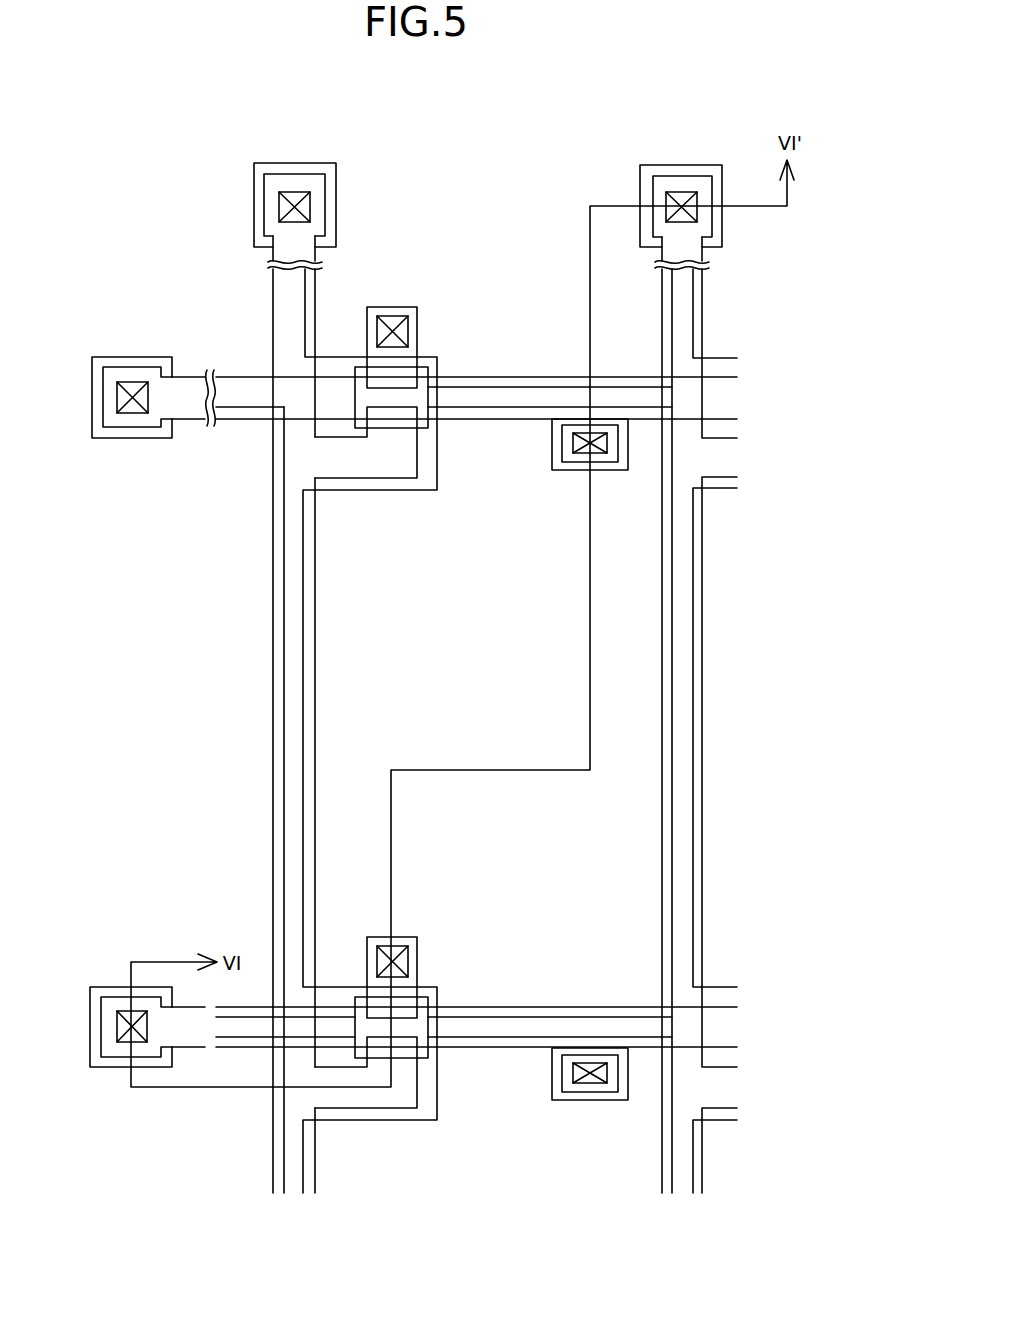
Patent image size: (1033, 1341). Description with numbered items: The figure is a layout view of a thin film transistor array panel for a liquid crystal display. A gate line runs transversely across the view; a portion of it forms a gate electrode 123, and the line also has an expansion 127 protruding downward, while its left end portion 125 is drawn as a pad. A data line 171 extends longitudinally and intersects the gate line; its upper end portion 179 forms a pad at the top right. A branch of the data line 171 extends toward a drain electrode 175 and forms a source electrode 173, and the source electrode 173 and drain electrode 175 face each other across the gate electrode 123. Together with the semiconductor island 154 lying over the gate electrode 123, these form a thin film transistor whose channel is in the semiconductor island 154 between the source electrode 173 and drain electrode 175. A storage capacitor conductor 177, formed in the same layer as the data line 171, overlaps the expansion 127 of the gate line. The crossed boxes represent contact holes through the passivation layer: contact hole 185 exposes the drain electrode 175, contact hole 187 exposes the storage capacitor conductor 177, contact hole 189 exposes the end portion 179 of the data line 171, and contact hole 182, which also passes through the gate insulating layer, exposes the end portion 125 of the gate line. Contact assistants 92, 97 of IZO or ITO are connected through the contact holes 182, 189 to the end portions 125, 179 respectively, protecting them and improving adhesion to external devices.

The contact assistant 92 is at (148, 1067).
The contact assistant 97 is at (722, 226).
The gate electrode 123 is at (417, 400).
The end portion of gate line 125 is at (110, 427).
The expansion of gate line 127 is at (565, 470).
The semiconductor island 154 is at (355, 397).
The data line 171 is at (272, 597).
The source electrode 173 is at (368, 478).
The drain electrode 175 is at (398, 307).
The storage capacitor conductor 177 is at (607, 462).
The end portion of data line 179 is at (697, 176).
The contact hole 182 is at (140, 413).
The contact hole 185 is at (408, 333).
The contact hole 187 is at (578, 432).
The contact hole 189 is at (680, 190).